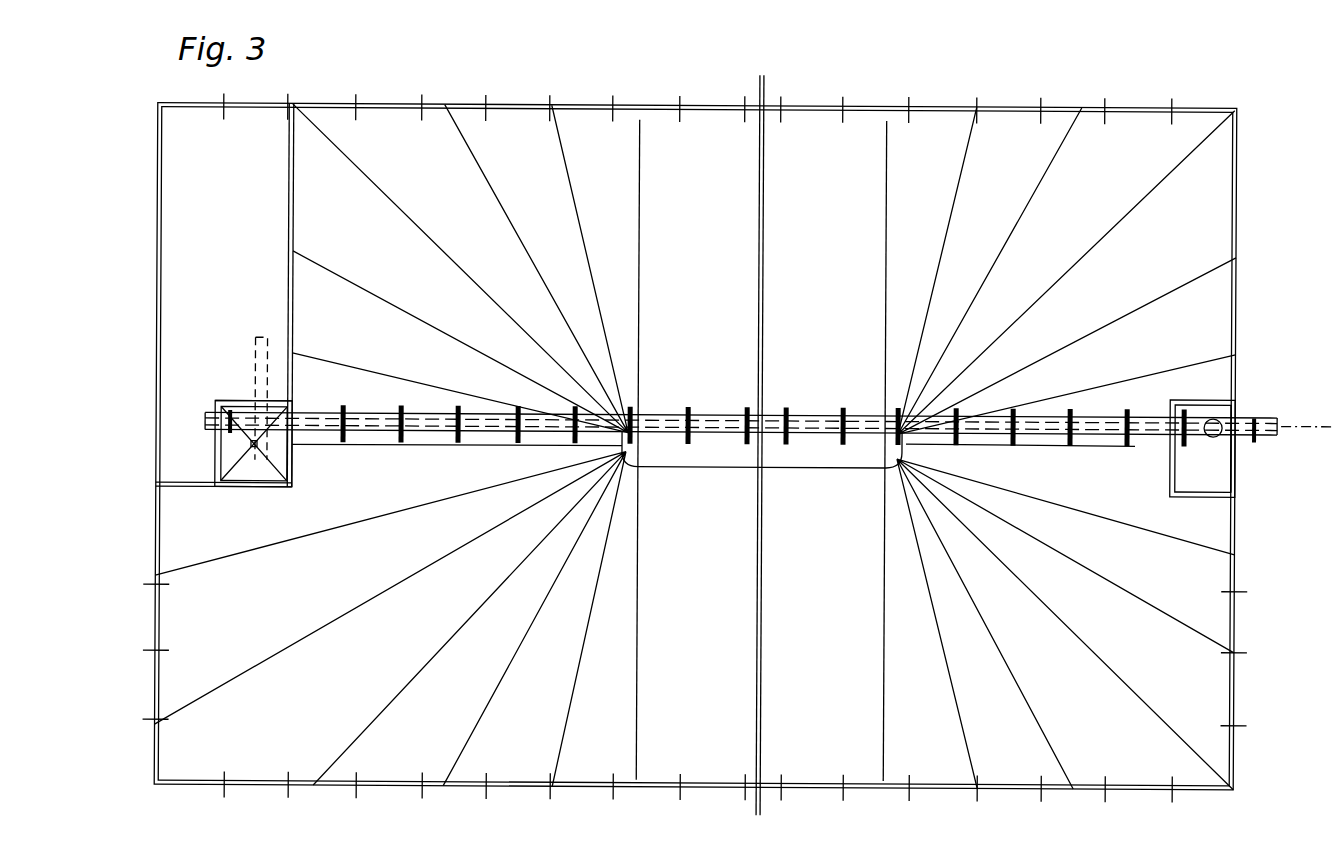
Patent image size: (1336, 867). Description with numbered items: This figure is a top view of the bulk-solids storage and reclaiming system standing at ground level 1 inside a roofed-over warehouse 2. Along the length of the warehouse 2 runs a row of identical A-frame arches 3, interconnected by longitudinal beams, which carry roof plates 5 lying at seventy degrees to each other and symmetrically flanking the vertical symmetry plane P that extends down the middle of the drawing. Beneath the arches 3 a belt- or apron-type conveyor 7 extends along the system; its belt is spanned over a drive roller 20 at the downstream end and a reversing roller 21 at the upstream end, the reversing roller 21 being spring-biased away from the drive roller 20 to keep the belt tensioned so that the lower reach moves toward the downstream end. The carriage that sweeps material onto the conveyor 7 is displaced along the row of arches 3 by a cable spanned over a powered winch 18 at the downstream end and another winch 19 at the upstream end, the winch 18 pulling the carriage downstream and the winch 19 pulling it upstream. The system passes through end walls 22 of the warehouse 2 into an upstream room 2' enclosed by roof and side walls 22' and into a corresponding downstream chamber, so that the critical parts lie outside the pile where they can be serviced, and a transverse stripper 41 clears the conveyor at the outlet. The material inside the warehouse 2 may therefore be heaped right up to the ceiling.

The ground level 1 is at (707, 202).
The roofed-over warehouse 2 is at (696, 438).
The upstream room 2' is at (1203, 472).
The A-frame arches 3 is at (403, 436).
The roof plates 5 is at (690, 406).
The conveyor 7 is at (372, 442).
The powered winch 18 is at (258, 416).
The winch 19 is at (1217, 417).
The drive roller 20 is at (210, 426).
The reversing roller 21 is at (1260, 440).
The end walls 22 is at (726, 353).
The roof and side walls 22' is at (1212, 448).
The transverse stripper 41 is at (262, 339).
The vertical symmetry plane P is at (1292, 428).